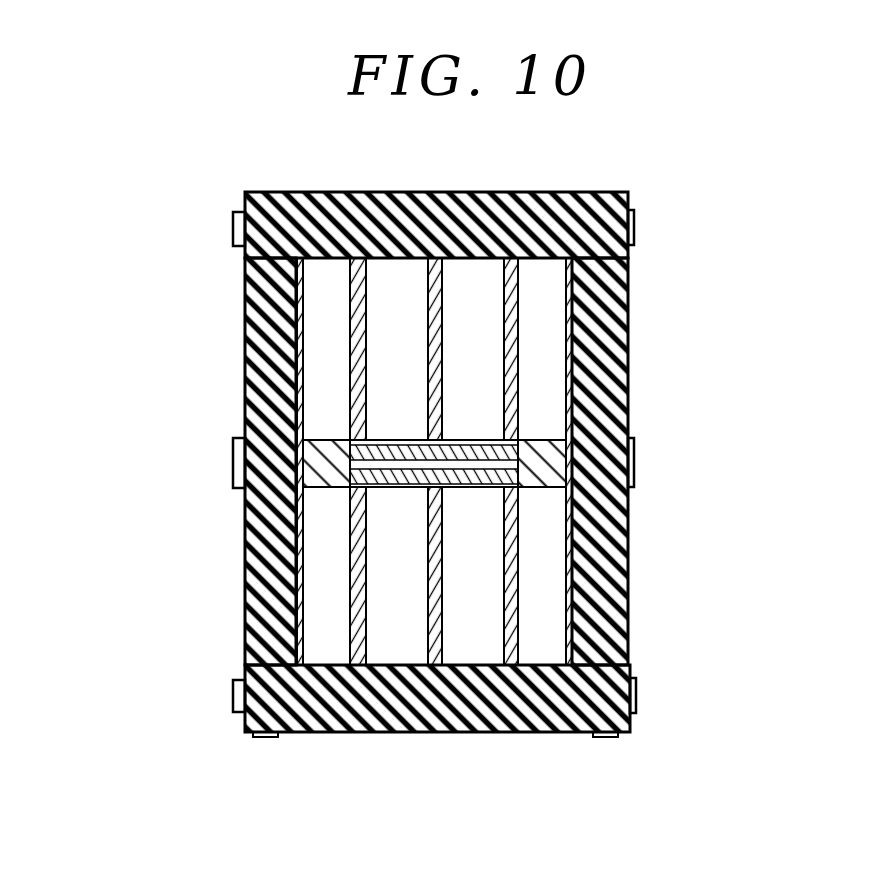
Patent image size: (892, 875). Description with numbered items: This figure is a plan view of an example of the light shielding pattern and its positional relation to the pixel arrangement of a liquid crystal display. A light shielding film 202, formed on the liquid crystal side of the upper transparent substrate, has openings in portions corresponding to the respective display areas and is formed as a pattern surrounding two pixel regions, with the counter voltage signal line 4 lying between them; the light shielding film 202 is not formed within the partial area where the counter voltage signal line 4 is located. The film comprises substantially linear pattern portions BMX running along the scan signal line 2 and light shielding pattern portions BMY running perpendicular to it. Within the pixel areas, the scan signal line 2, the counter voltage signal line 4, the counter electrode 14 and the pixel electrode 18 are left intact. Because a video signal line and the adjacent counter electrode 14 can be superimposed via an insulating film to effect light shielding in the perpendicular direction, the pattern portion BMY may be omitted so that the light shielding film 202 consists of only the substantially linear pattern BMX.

The substantially linear pattern BMX is at (568, 206).
The light shielding pattern portion BMY is at (441, 461).
The scan signal line 2 is at (632, 218).
The counter voltage signal line 4 is at (541, 430).
The counter electrode 14 is at (303, 634).
The pixel electrode 18 is at (357, 519).
The light shielding film 202 is at (620, 580).